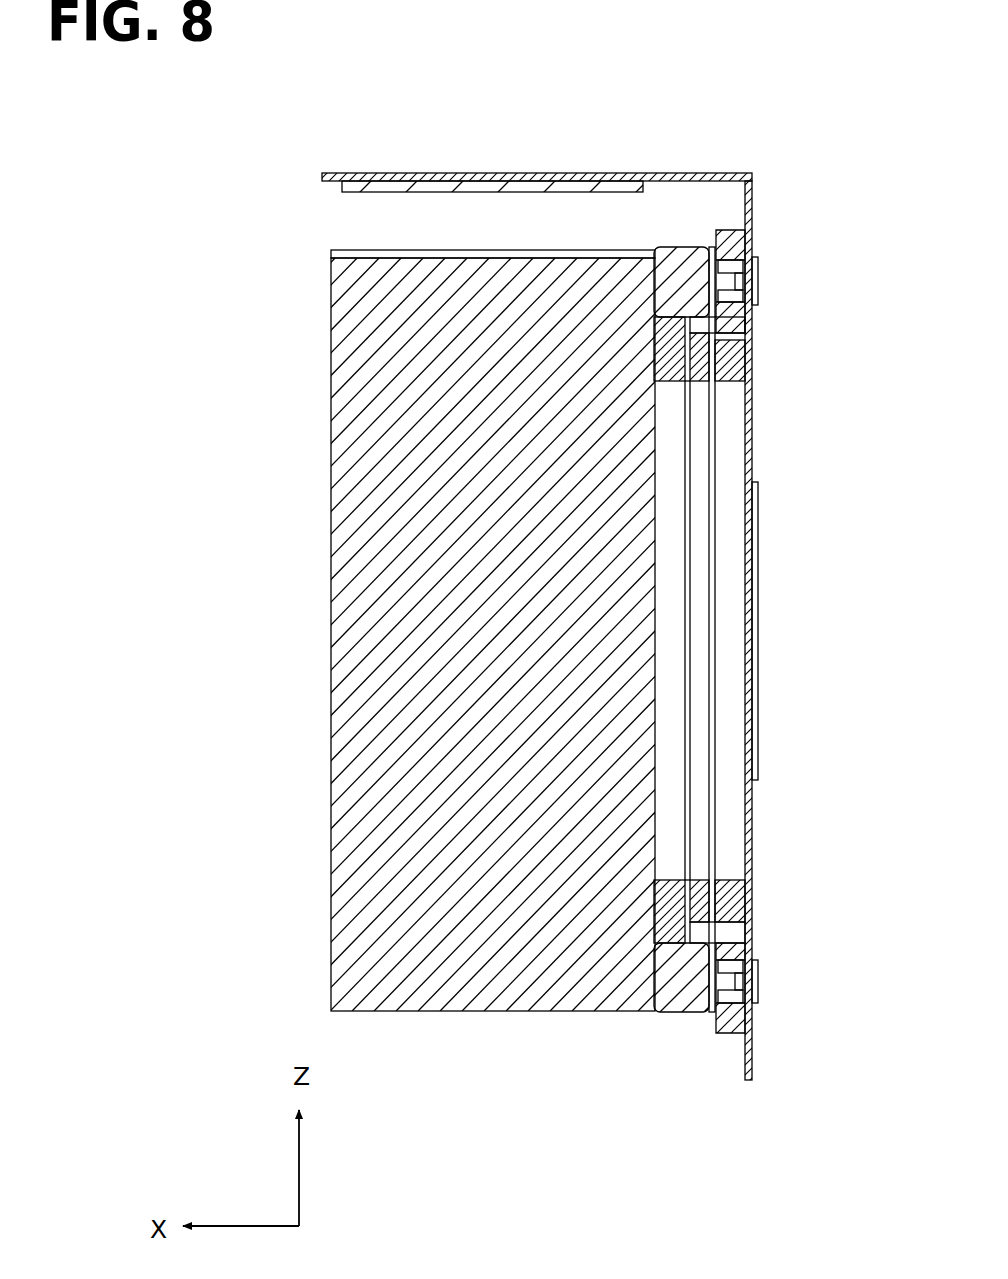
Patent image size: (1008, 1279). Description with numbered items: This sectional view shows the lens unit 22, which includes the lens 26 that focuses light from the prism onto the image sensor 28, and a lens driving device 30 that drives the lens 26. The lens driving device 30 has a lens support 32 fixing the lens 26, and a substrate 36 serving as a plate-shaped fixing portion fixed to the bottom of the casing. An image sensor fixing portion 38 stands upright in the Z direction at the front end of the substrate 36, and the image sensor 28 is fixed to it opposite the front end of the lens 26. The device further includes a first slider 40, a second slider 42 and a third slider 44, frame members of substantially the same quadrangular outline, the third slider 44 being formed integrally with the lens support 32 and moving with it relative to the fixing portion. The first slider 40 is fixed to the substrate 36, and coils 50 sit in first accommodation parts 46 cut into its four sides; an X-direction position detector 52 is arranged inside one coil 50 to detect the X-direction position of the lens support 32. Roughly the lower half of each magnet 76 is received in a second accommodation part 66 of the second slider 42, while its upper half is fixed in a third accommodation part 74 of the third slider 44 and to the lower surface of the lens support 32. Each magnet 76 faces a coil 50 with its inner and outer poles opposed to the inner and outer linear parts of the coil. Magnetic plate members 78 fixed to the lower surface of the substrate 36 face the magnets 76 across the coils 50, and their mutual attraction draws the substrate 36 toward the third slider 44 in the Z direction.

The lens unit 22 is at (402, 145).
The lens 26 is at (368, 485).
The image sensor 28 is at (478, 182).
The lens driving device 30 is at (724, 1040).
The lens support 32 is at (392, 247).
The substrate 36 is at (752, 805).
The image sensor fixing portion 38 is at (568, 175).
The first slider 40 is at (718, 883).
The second slider 42 is at (700, 915).
The third slider 44 is at (688, 385).
The first accommodation parts 46 is at (735, 345).
The coils 50 is at (738, 232).
The X-direction position detector 52 is at (740, 287).
The second accommodation parts 66 is at (706, 322).
The third accommodation parts 74 is at (662, 325).
The magnet 76 is at (684, 258).
The magnetic plate members 78 is at (756, 265).